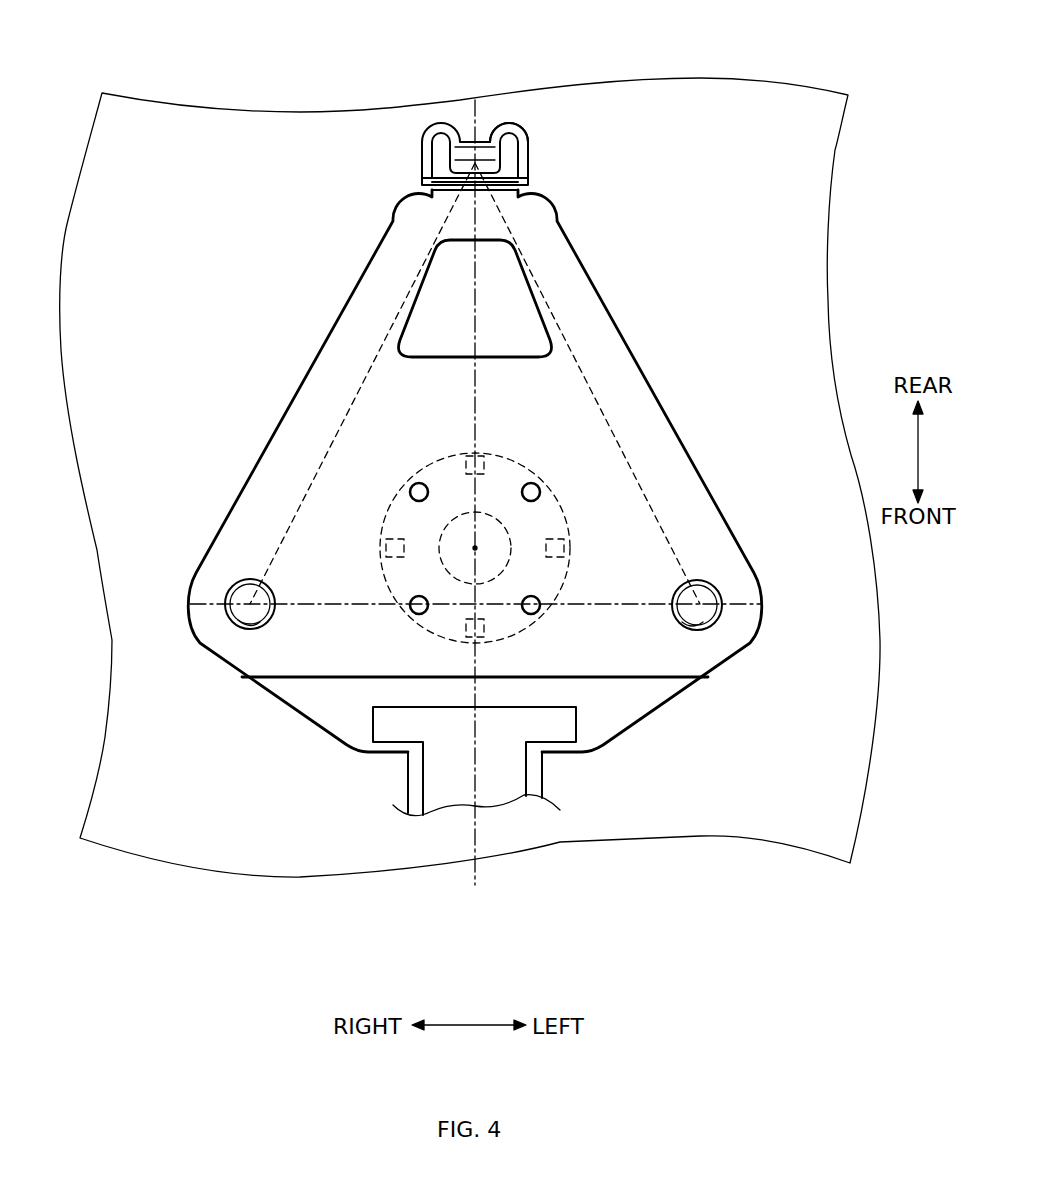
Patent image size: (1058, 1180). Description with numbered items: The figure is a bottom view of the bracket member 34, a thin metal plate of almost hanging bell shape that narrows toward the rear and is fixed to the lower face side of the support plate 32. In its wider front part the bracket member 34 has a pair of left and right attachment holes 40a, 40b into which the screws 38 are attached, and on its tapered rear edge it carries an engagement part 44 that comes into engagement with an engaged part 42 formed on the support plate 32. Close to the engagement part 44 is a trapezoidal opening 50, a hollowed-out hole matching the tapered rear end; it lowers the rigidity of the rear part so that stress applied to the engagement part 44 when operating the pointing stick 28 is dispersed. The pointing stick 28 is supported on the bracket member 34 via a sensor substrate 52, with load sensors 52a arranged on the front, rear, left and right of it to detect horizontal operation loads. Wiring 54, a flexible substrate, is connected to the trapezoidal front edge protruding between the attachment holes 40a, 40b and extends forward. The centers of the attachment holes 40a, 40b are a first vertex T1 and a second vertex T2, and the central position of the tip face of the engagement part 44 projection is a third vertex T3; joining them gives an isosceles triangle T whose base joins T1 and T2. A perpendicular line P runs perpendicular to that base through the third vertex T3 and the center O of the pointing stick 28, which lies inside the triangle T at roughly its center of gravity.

The pointing stick 28 is at (460, 512).
The support plate 32 is at (763, 175).
The bracket member 34 is at (267, 411).
The screws 38 is at (252, 603).
The attachment hole 40a is at (694, 622).
The attachment hole 40b is at (241, 616).
The engaged part 42 is at (488, 150).
The engagement part 44 is at (505, 162).
The opening 50 is at (450, 293).
The sensor substrate 52 is at (538, 628).
The load sensors 52a is at (486, 462).
The wiring 54 is at (495, 767).
The triangle T is at (572, 357).
The first vertex T1 is at (697, 605).
The second vertex T2 is at (250, 604).
The third vertex T3 is at (470, 162).
The center O is at (475, 548).
The perpendicular line P is at (474, 905).